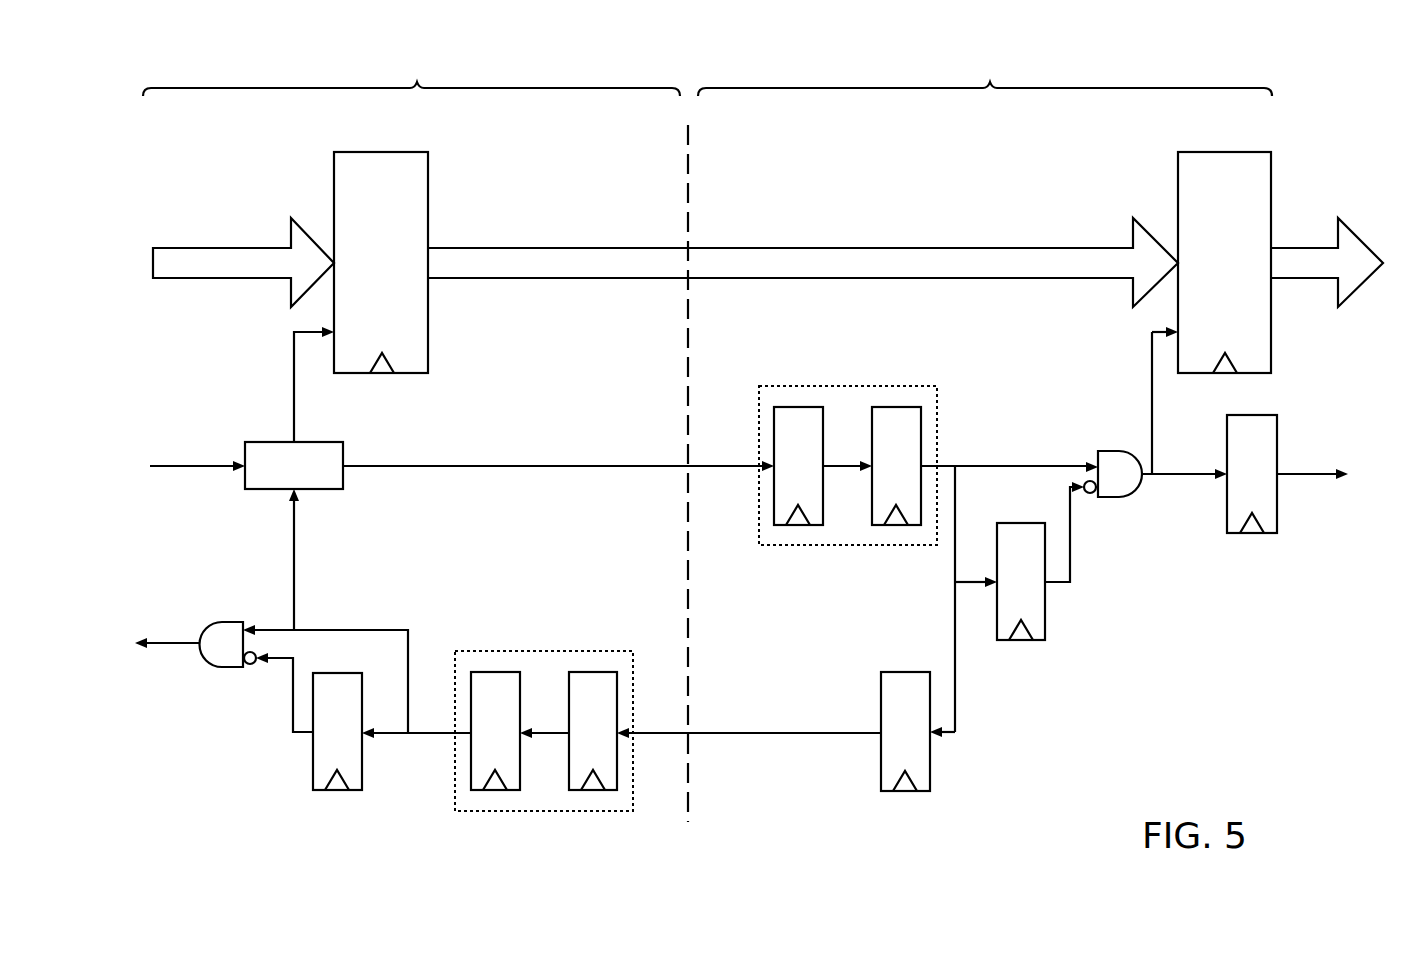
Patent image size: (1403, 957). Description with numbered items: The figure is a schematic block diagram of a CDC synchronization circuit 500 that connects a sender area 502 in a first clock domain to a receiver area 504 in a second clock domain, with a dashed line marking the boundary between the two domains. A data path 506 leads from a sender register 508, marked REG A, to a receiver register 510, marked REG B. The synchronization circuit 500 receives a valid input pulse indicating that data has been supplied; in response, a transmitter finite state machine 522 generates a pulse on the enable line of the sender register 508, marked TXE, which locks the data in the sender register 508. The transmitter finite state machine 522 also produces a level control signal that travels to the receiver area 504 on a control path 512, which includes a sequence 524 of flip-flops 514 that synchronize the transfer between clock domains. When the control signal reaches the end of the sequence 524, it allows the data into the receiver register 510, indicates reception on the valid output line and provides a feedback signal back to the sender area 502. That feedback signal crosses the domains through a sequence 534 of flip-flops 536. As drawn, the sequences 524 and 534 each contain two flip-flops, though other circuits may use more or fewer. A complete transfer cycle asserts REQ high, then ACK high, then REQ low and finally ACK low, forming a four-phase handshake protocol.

The CDC synchronization circuit 500 is at (1306, 141).
The sender area 502 is at (411, 105).
The receiver area 504 is at (985, 105).
The data path 506 is at (1019, 248).
The sender register 508 is at (428, 190).
The receiver register 510 is at (1178, 184).
The control path 512 is at (612, 466).
The flip-flops 514 is at (793, 407).
The transmitter finite state machine 522 is at (343, 483).
The sequence of flip-flops 524 is at (848, 475).
The sequence of flip-flops 534 is at (544, 722).
The flip-flops 536 is at (508, 790).